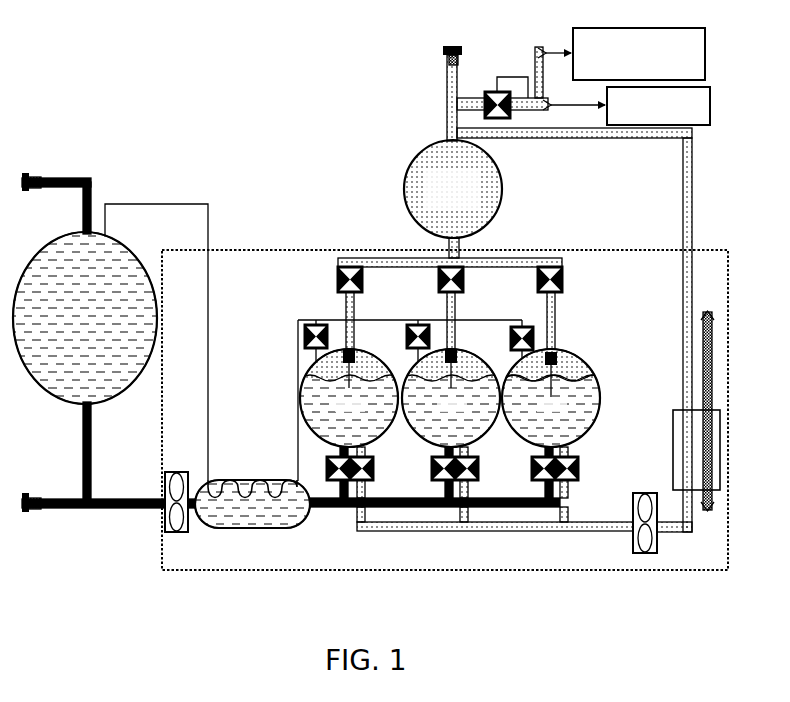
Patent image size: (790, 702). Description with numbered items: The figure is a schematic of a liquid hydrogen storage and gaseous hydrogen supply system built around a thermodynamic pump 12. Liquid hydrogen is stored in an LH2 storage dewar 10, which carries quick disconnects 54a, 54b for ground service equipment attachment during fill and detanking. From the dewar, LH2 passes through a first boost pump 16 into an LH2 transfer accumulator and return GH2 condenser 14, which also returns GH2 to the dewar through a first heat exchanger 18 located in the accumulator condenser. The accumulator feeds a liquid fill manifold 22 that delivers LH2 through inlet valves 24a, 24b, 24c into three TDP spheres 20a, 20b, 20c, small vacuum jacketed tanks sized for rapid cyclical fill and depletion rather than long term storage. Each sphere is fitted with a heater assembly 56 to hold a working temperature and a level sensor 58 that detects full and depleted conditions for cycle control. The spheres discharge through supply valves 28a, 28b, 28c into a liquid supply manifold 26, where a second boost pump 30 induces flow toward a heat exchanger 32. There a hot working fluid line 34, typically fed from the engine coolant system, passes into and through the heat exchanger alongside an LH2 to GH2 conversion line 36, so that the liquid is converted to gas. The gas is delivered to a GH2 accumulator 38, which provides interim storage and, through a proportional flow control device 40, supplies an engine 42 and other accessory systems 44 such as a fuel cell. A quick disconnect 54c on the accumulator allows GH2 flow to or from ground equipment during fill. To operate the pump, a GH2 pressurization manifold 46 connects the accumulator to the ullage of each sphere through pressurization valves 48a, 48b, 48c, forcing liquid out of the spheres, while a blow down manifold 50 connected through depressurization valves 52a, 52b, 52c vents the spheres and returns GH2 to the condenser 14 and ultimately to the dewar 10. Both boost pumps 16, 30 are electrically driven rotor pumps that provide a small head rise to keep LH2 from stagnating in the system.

The LH2 storage dewar 10 is at (106, 238).
The thermodynamic pump 12 is at (254, 250).
The LH2 transfer accumulator and return GH2 condenser 14 is at (256, 490).
The first boost pump 16 is at (178, 532).
The first heat exchanger 18 is at (258, 482).
The TDP sphere 20a is at (302, 388).
The TDP sphere 20b is at (465, 348).
The TDP sphere 20c is at (598, 372).
The liquid fill manifold 22 is at (328, 508).
The inlet valve 24a is at (327, 474).
The inlet valve 24b is at (432, 474).
The inlet valve 24c is at (532, 472).
The liquid supply manifold 26 is at (420, 531).
The supply valve 28a is at (374, 463).
The supply valve 28b is at (479, 463).
The supply valve 28c is at (578, 463).
The second boost pump 30 is at (633, 540).
The heat exchanger 32 is at (673, 450).
The hot working fluid line 34 is at (707, 370).
The LH2 to GH2 conversion line 36 is at (684, 330).
The GH2 accumulator 38 is at (500, 198).
The proportional flow control device 40 is at (514, 70).
The engine 42 is at (711, 94).
The accessory systems 44 is at (706, 44).
The GH2 pressurization manifold 46 is at (497, 263).
The pressurization valve 48a is at (362, 279).
The pressurization valve 48b is at (463, 279).
The pressurization valve 48c is at (562, 279).
The blow down manifold 50 is at (312, 318).
The depressurization valve 52a is at (305, 335).
The depressurization valve 52b is at (407, 339).
The depressurization valve 52c is at (512, 339).
The quick disconnect 54a is at (23, 172).
The quick disconnect 54b is at (23, 494).
The quick disconnect 54c is at (452, 47).
The heater assembly 56 is at (576, 358).
The level sensor 58 is at (560, 368).